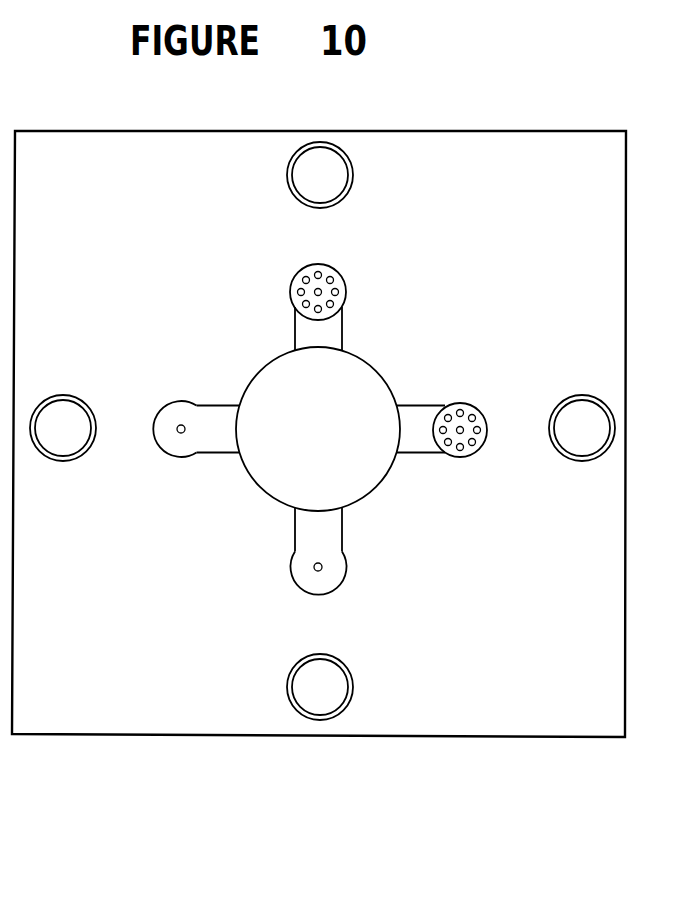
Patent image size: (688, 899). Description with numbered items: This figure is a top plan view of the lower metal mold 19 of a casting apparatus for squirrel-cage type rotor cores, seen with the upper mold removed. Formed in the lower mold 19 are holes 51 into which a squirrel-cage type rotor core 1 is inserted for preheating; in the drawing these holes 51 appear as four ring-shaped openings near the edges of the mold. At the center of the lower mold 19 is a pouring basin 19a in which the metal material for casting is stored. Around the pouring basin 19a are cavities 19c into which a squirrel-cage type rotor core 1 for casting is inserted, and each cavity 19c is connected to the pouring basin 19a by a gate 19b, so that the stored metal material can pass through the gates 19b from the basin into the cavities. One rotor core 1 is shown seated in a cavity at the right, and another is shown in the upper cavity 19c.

The lower metal mold 19 is at (432, 722).
The holes 51 is at (333, 170).
The pouring basin 19a is at (355, 367).
The gates 19b is at (337, 328).
The cavities 19c is at (333, 263).
The squirrel-cage type rotor cores 1 is at (462, 400).